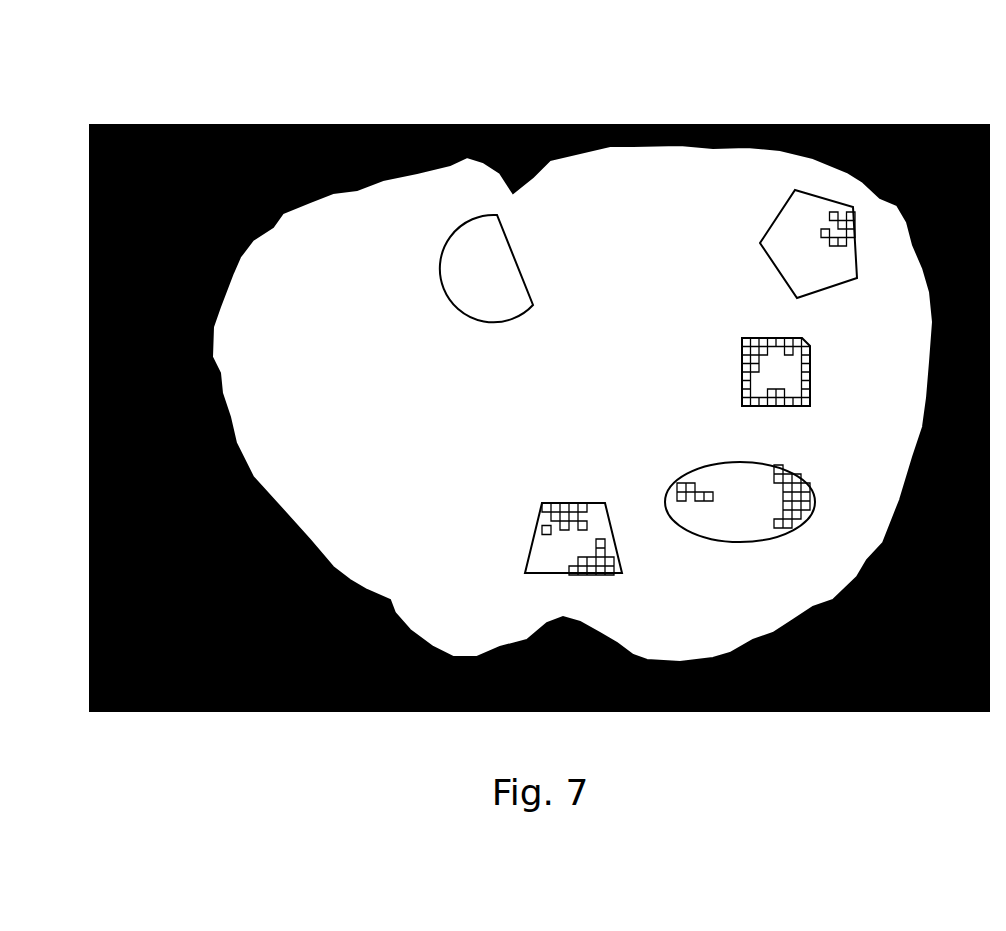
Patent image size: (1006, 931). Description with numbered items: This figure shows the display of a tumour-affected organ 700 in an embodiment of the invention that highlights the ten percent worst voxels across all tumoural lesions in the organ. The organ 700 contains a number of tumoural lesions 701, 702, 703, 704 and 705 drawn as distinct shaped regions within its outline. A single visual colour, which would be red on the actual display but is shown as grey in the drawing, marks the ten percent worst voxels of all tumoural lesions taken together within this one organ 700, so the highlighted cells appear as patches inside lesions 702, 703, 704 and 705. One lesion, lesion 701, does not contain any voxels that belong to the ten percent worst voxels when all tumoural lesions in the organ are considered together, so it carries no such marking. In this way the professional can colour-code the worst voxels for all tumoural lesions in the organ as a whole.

The organ 700 is at (633, 163).
The tumoural lesion 701 is at (520, 268).
The tumoural lesion 702 is at (772, 267).
The tumoural lesion 703 is at (810, 383).
The tumoural lesion 704 is at (687, 468).
The tumoural lesion 705 is at (595, 503).